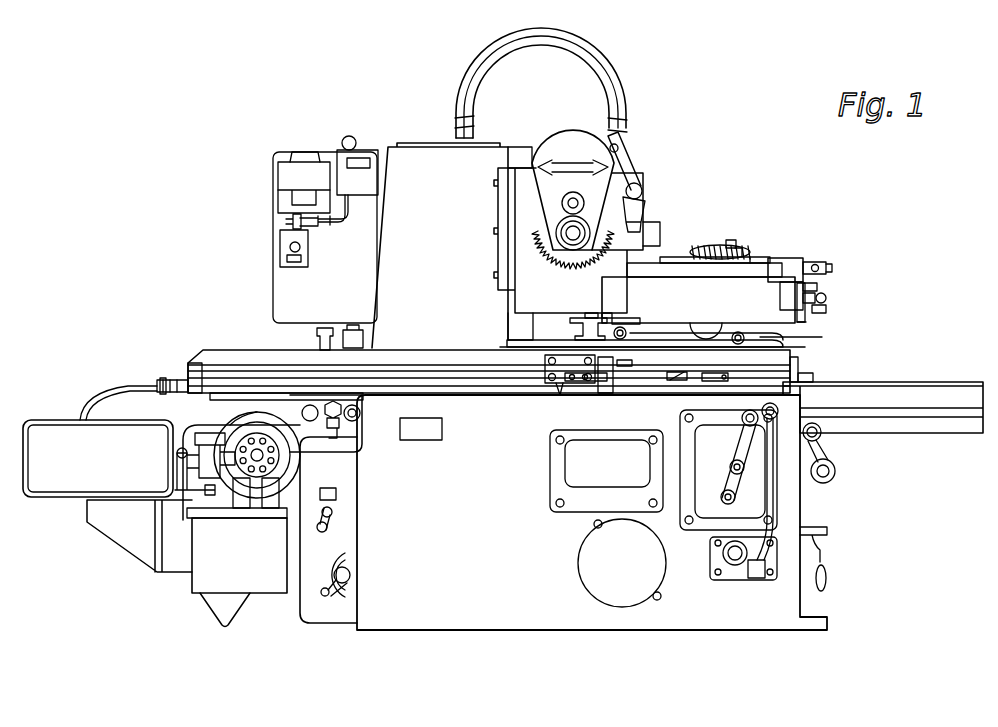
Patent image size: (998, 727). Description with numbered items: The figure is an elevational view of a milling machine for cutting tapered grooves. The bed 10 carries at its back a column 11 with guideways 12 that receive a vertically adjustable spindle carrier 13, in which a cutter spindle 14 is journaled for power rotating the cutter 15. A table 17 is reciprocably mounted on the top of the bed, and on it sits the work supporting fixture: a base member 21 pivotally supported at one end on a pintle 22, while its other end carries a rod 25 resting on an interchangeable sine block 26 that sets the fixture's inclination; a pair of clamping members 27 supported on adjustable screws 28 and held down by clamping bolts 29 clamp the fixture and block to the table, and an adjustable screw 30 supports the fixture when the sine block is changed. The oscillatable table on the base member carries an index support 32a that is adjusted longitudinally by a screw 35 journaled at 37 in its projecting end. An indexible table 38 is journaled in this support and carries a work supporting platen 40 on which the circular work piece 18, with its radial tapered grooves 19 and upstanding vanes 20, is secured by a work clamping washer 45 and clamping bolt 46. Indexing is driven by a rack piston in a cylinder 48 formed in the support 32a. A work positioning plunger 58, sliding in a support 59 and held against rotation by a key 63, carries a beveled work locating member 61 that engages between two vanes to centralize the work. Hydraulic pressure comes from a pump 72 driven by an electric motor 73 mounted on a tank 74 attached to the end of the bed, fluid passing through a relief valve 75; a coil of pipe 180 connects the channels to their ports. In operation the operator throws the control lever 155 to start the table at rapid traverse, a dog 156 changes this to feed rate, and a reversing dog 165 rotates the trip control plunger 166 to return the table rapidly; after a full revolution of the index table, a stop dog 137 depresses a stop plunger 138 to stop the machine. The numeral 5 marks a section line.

The section line 5 is at (564, 306).
The bed 10 is at (418, 605).
The column 11 is at (422, 168).
The guideways 12 is at (518, 157).
The spindle carrier 13 is at (613, 247).
The cutter spindle 14 is at (636, 185).
The cutter 15 is at (533, 233).
The table 17 is at (792, 377).
The work piece 18 is at (695, 252).
The radial tapered grooves 19 is at (739, 254).
The vanes 20 is at (751, 259).
The base member 21 is at (803, 347).
The pintle 22 is at (822, 337).
The rod 25 is at (626, 332).
The sine block 26 is at (625, 343).
The clamping members 27 is at (592, 326).
The adjustable screws 28 is at (575, 340).
The clamping bolts 29 is at (632, 322).
The adjustable screw 30 is at (607, 315).
The index support 32a is at (818, 288).
The screw 35 is at (827, 309).
The journal 37 is at (822, 297).
The indexible table 38 is at (665, 276).
The work supporting platen 40 is at (781, 261).
The work clamping washer 45 is at (724, 248).
The clamping bolt 46 is at (731, 248).
The cylinder 48 is at (806, 321).
The work positioning plunger 58 is at (829, 264).
The support 59 is at (808, 264).
The work locating member 61 is at (793, 268).
The key 63 is at (818, 262).
The pump 72 is at (262, 433).
The electric motor 73 is at (238, 430).
The tank 74 is at (220, 558).
The relief valve 75 is at (200, 430).
The stop dog 137 is at (557, 382).
The stop plunger 138 is at (560, 395).
The control lever 155 is at (830, 450).
The dog 156 is at (677, 380).
The reversing dog 165 is at (716, 381).
The trip control plunger 166 is at (611, 385).
The coil of pipe 180 is at (693, 325).